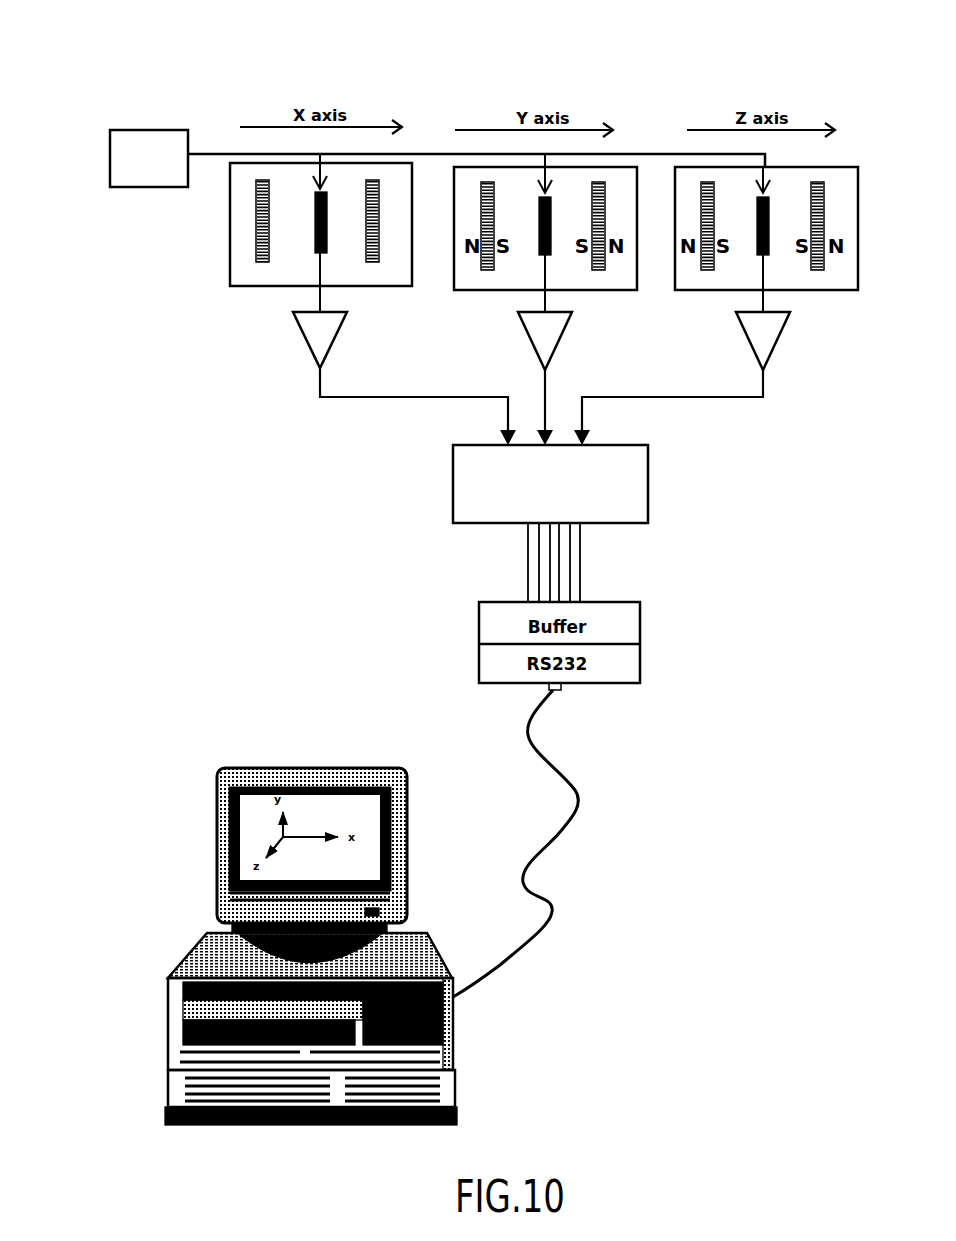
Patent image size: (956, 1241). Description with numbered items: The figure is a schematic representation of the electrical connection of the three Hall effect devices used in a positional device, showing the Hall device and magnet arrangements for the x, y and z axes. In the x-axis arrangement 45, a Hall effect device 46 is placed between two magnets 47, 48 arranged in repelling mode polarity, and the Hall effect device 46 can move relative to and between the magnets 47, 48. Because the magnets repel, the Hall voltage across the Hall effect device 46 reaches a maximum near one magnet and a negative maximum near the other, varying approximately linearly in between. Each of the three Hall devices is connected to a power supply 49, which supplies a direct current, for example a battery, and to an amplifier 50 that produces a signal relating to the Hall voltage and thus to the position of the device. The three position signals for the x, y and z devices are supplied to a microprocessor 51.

The x-axis arrangement 45 is at (228, 267).
The Hall effect device 46 is at (328, 257).
The magnet 47 is at (254, 212).
The magnet 48 is at (382, 190).
The power supply 49 is at (148, 152).
The amplifier 50 is at (306, 350).
The microprocessor 51 is at (612, 487).